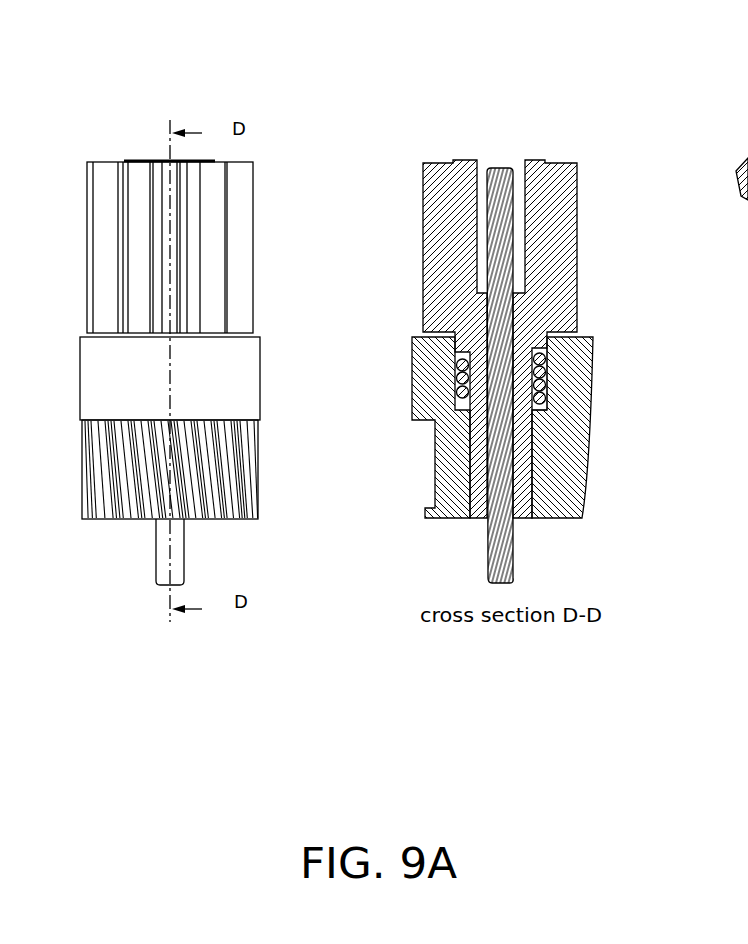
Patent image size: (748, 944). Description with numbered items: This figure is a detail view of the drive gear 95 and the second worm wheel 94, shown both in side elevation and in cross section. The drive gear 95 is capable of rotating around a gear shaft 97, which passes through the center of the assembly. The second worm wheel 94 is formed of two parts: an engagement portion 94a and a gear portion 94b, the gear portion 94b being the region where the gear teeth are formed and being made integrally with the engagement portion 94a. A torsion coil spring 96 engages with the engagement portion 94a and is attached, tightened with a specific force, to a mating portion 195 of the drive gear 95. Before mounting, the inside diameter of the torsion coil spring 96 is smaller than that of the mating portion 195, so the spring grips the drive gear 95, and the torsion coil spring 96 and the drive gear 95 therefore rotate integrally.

The drive gear 95 is at (210, 232).
The second worm wheel 94 is at (266, 411).
The engagement portion 94a is at (237, 385).
The gear portion 94b is at (237, 487).
The gear shaft 97 is at (183, 567).
The mating portion 195 is at (471, 381).
The torsion coil spring 96 is at (541, 373).